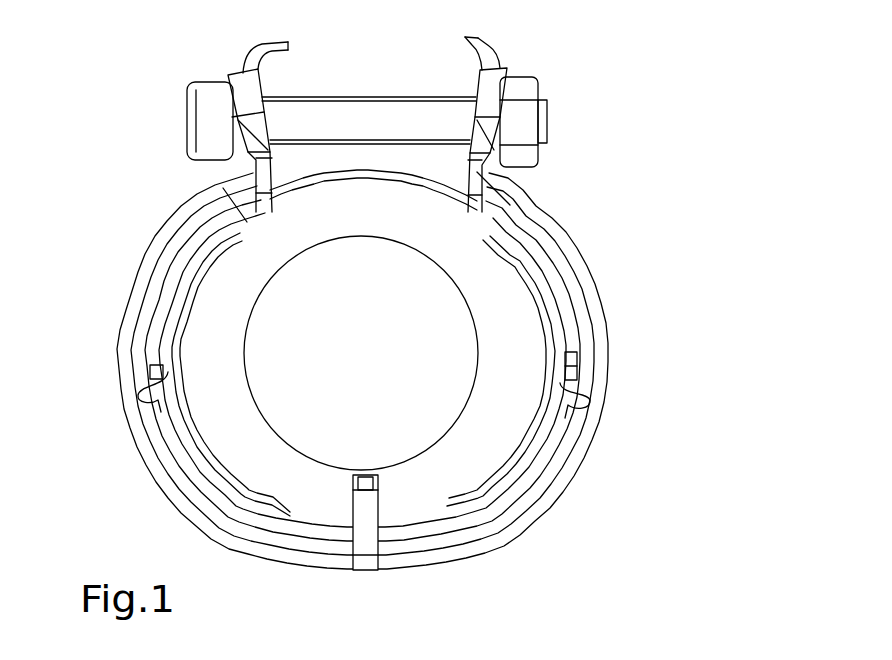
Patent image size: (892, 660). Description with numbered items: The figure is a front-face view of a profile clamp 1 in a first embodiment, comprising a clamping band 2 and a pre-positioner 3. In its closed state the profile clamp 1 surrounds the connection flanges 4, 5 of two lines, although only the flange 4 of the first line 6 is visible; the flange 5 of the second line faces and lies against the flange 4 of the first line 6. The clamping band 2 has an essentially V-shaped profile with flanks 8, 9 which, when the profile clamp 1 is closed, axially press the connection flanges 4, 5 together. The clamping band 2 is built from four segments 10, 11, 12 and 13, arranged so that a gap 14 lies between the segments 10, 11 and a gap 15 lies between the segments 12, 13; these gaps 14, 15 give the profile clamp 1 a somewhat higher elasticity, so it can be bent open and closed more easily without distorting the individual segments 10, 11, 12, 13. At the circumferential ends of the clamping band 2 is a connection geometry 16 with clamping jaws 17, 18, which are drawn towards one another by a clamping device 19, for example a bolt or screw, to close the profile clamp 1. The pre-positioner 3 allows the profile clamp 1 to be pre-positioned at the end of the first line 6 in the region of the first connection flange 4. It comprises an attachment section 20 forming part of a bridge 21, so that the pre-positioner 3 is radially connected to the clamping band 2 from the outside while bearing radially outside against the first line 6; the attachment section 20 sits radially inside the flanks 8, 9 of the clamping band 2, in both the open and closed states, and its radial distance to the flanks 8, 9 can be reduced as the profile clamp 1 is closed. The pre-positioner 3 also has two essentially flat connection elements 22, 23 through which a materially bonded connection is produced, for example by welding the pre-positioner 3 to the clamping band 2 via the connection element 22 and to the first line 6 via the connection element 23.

The profile clamp 1 is at (656, 281).
The clamping band 2 is at (560, 242).
The pre-positioner 3 is at (388, 573).
The connection flange 4 is at (515, 432).
The connection flange 5 is at (520, 365).
The first line 6 is at (283, 448).
The flank 8 is at (178, 283).
The flank 9 is at (563, 318).
The segment 10 is at (104, 305).
The segment 11 is at (136, 483).
The segment 12 is at (542, 524).
The segment 13 is at (596, 257).
The gap 14 is at (150, 395).
The gap 15 is at (582, 398).
The connection geometry 16 is at (390, 75).
The clamping jaw 17 is at (248, 90).
The clamping jaw 18 is at (490, 88).
The clamping device 19 is at (328, 112).
The attachment section 20 is at (341, 484).
The bridge 21 is at (371, 513).
The connection element 22 is at (360, 565).
The connection element 23 is at (366, 483).